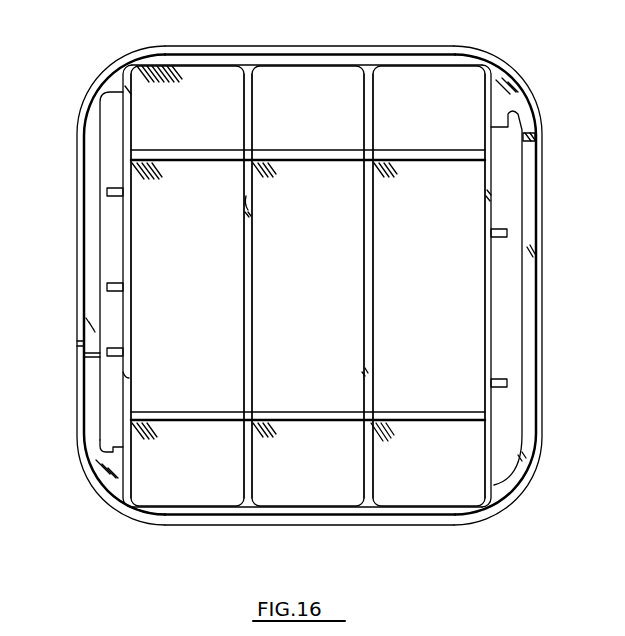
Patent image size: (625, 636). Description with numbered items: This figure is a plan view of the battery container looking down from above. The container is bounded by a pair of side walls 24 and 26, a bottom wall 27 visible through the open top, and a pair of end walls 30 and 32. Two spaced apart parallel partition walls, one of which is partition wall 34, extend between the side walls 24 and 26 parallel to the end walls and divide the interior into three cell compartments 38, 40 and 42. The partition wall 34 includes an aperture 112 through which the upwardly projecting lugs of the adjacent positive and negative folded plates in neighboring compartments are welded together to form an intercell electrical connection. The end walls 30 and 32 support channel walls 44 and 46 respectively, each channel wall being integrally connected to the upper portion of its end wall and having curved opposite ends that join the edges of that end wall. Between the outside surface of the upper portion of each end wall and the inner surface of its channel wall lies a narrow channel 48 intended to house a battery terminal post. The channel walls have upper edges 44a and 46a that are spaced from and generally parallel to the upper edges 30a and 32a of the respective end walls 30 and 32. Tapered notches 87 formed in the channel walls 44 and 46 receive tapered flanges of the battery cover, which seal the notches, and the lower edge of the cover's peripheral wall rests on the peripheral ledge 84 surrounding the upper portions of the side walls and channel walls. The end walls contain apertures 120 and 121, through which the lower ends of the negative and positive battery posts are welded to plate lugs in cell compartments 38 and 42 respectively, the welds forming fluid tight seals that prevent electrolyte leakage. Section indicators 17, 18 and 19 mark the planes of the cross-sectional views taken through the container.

The section line 17- 17 is at (72, 287).
The section line 18- 18 is at (592, 109).
The section line 19- 19 is at (428, 402).
The side wall 24 is at (293, 525).
The side wall 26 is at (312, 46).
The bottom wall 27 is at (385, 432).
The end wall 30 is at (132, 211).
The upper edge of end wall 30a is at (128, 233).
The end wall 32 is at (488, 328).
The upper edge of end wall 32a is at (485, 311).
The partition wall 34 is at (250, 114).
The cell compartment 38 is at (374, 114).
The cell compartment 40 is at (315, 295).
The cell compartment 42 is at (435, 295).
The channel wall 44 is at (77, 143).
The upper edge of channel wall 44a is at (84, 157).
The channel wall 46 is at (542, 373).
The upper edge of channel wall 46a is at (532, 356).
The channel 48 is at (108, 203).
The peripheral ledge 84 is at (132, 513).
The tapered notch 87 is at (530, 186).
The aperture 112 is at (250, 200).
The aperture 120 is at (127, 375).
The aperture 121 is at (488, 195).